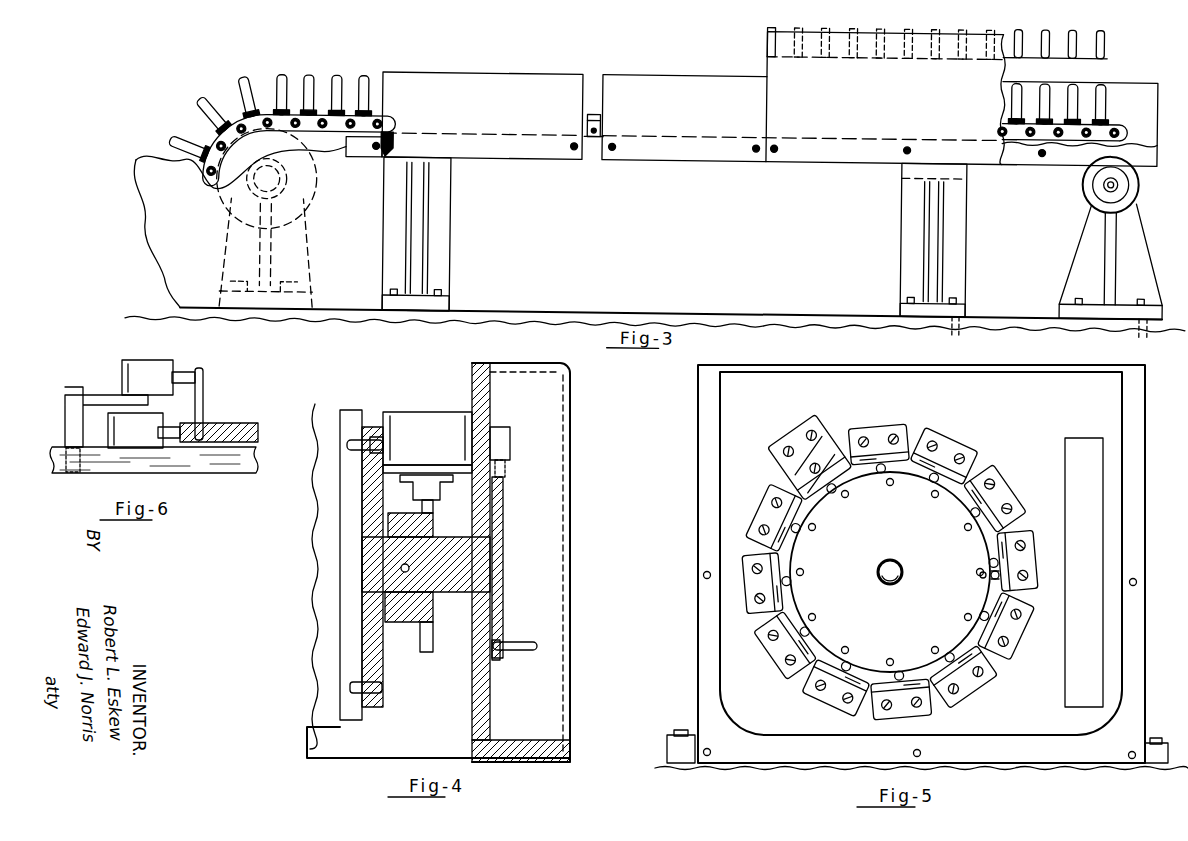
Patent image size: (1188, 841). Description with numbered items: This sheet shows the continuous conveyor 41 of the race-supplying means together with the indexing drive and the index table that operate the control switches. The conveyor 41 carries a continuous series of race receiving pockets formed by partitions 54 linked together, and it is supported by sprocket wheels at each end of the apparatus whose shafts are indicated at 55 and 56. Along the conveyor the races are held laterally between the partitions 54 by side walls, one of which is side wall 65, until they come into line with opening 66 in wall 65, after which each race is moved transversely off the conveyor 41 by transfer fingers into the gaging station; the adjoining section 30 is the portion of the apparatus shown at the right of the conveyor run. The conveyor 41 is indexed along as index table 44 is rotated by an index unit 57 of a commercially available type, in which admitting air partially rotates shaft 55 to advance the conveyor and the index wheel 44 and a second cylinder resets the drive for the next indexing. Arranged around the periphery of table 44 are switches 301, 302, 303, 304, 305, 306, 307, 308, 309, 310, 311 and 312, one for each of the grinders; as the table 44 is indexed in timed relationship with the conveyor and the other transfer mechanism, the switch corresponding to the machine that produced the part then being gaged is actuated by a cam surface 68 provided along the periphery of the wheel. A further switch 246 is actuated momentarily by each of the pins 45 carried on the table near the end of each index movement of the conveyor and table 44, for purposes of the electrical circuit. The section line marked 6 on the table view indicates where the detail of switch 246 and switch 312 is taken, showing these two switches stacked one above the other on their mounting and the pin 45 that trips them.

In FIG. 3, the magazine / feed section 30 is at (760, 27).
In FIG. 3, the conveyor 41 is at (623, 176).
In FIG. 4, the conveyor 41 is at (409, 412).
In FIG. 4, the index table 44 is at (500, 523).
In FIG. 5, the index table 44 is at (917, 605).
In FIG. 4, the pins 45 is at (520, 642).
In FIG. 6, the pins 45 is at (205, 393).
In FIG. 5, the pins 45 is at (966, 531).
In FIG. 3, the partitions 54 is at (200, 108).
In FIG. 4, the partitions 54 is at (411, 450).
In FIG. 3, the shaft 55 is at (266, 182).
In FIG. 4, the shaft 55 is at (418, 583).
In FIG. 3, the shaft 56 is at (1113, 176).
In FIG. 4, the index unit 57 is at (327, 423).
In FIG. 3, the side wall 65 is at (620, 78).
In FIG. 3, the opening 66 is at (597, 78).
In FIG. 5, the cam surface 68 is at (988, 565).
In FIG. 6, the switch 246 is at (122, 365).
In FIG. 5, the switch 246 is at (797, 477).
In FIG. 4, the switch 301 is at (495, 432).
In FIG. 5, the switch 301 is at (877, 438).
In FIG. 5, the switch 302 is at (948, 445).
In FIG. 5, the switch 303 is at (1012, 482).
In FIG. 5, the switch 304 is at (1038, 553).
In FIG. 5, the switch 305 is at (1023, 635).
In FIG. 5, the switch 306 is at (978, 692).
In FIG. 5, the switch 307 is at (897, 720).
In FIG. 5, the switch 308 is at (840, 712).
In FIG. 5, the switch 309 is at (778, 667).
In FIG. 5, the switch 310 is at (757, 615).
In FIG. 5, the switch 311 is at (757, 515).
In FIG. 6, the switch 312 is at (147, 437).
In FIG. 5, the section line for Fig. 6 is at (797, 422).